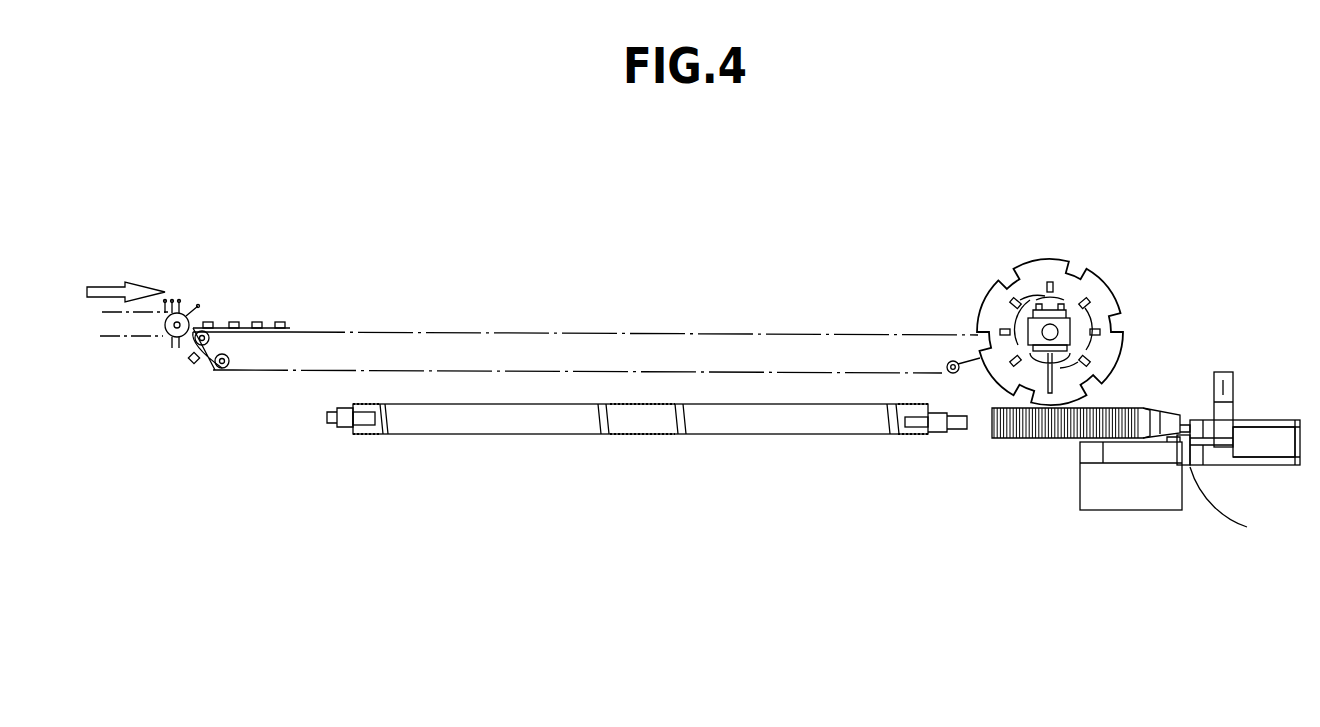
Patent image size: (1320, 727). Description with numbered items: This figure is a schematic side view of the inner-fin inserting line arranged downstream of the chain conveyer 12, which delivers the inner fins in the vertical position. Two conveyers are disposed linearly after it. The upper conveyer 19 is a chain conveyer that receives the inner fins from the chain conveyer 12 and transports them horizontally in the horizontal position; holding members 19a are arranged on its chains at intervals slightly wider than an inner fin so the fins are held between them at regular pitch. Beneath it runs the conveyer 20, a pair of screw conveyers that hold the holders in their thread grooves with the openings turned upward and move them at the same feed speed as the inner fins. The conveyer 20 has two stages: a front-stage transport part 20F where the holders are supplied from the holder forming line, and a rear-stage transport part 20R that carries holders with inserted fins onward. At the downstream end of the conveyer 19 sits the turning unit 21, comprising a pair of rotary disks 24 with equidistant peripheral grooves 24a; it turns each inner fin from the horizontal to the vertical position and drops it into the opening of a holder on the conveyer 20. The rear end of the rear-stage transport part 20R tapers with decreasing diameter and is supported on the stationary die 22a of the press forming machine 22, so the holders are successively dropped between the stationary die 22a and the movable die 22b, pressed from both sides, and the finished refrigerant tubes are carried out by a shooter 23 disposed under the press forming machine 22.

The chain conveyer 12 is at (172, 346).
The conveyer 19 is at (573, 332).
The holding members 19a is at (280, 322).
The conveyer 20 is at (758, 464).
The front-stage transport part 20F is at (515, 436).
The rear-stage transport part 20R is at (1007, 440).
The turning unit 21 is at (1010, 291).
The press forming machine 22 is at (1190, 456).
The stationary die 22a is at (1182, 450).
The movable die 22b is at (1203, 420).
The shooter 23 is at (1247, 527).
The rotary disks 24 is at (1033, 270).
The grooves 24a is at (978, 316).